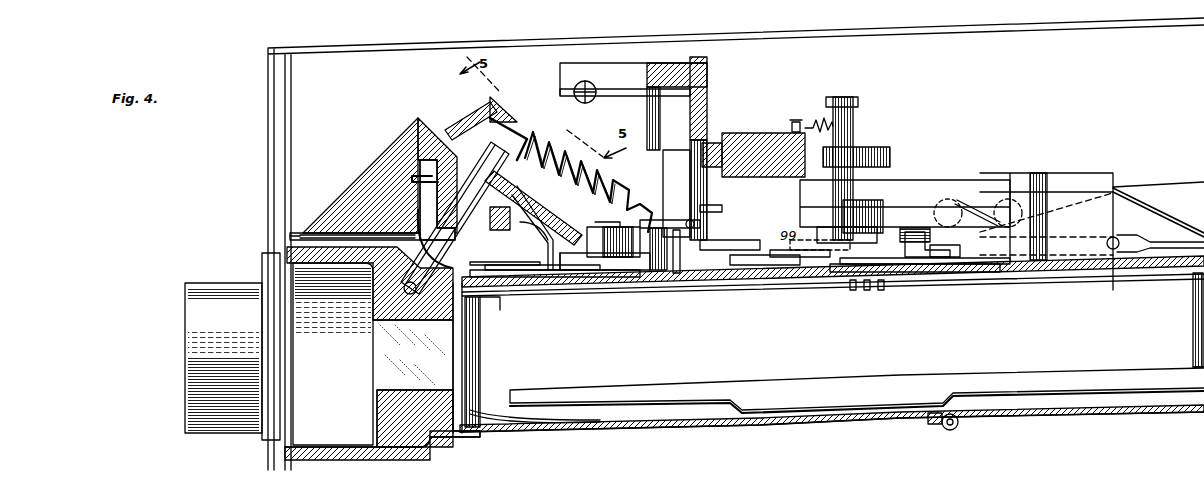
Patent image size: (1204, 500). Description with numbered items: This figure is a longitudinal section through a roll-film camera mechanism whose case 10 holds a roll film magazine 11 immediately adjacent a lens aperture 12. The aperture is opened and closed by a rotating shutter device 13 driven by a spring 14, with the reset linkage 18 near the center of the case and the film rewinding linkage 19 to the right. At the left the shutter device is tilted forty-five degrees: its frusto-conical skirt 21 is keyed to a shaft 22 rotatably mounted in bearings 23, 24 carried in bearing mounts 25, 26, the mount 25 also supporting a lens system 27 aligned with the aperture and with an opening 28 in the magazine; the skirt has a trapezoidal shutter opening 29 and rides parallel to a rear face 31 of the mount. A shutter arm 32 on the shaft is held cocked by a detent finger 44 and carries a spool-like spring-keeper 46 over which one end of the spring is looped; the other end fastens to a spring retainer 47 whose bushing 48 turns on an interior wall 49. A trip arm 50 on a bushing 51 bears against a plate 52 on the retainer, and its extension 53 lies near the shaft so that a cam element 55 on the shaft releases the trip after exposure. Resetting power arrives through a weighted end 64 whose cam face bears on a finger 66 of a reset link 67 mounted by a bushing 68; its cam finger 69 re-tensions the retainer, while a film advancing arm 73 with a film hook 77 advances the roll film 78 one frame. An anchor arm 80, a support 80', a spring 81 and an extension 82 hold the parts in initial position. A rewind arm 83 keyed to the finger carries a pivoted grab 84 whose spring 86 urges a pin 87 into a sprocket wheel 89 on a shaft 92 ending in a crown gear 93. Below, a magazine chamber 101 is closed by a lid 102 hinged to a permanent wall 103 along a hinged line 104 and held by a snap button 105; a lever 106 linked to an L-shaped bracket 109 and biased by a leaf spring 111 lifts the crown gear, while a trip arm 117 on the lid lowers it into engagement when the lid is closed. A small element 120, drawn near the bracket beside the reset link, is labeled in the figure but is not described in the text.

The case 10 is at (879, 436).
The roll film magazine 11 is at (1160, 357).
The lens aperture 12 is at (396, 390).
The rotating shutter device 13 is at (378, 162).
The spring 14 is at (516, 135).
The linkage 18 is at (722, 225).
The film rewinding linkage 19 is at (871, 121).
The frusto-conical skirt 21 is at (290, 236).
The shaft 22 is at (468, 228).
The bearing 23 is at (438, 320).
The bearing 24 is at (516, 236).
The bearing mount 25 is at (400, 450).
The bearing mount 26 is at (382, 150).
The lens system 27 is at (247, 425).
The opening 28 is at (490, 380).
The shutter opening 29 is at (340, 233).
The rear face 31 is at (456, 440).
The shutter arm 32 is at (446, 128).
The detent finger 44 is at (436, 159).
The spring-keeper 46 is at (486, 113).
The spring retainer 47 is at (705, 200).
The bushing 48 is at (604, 278).
The interior wall 49 is at (528, 280).
The trip arm 50 is at (660, 282).
The bushing 51 is at (570, 270).
The plate 52 is at (700, 283).
The extension 53 is at (552, 205).
The cam element 55 is at (528, 178).
The weighted end 64 is at (757, 135).
The finger 66 is at (722, 132).
The reset link 67 is at (730, 121).
The bushing 68 is at (723, 208).
The cam finger 69 is at (722, 240).
The film advancing arm 73 is at (563, 300).
The film hook 77 is at (478, 315).
The roll film 78 is at (480, 332).
The anchor arm 80 is at (625, 101).
The support 80' is at (719, 95).
The spring 81 is at (573, 92).
The extension 82 is at (560, 64).
The rewind arm 83 is at (757, 280).
The pivoted grab 84 is at (973, 282).
The spring 86 is at (920, 282).
The pin 87 is at (872, 248).
The sprocket wheel 89 is at (780, 280).
The shaft 92 is at (826, 290).
The crown gear 93 is at (871, 291).
The magazine chamber 101 is at (726, 410).
The lid 102 is at (1084, 412).
The permanent wall 103 is at (928, 425).
The hinged line 104 is at (960, 427).
The snap button 105 is at (1203, 332).
The lever 106 is at (1117, 248).
The L-shaped bracket 109 is at (850, 112).
The leaf spring 111 is at (1160, 218).
The trip arm 117 is at (1203, 299).
The spring 120 is at (814, 122).